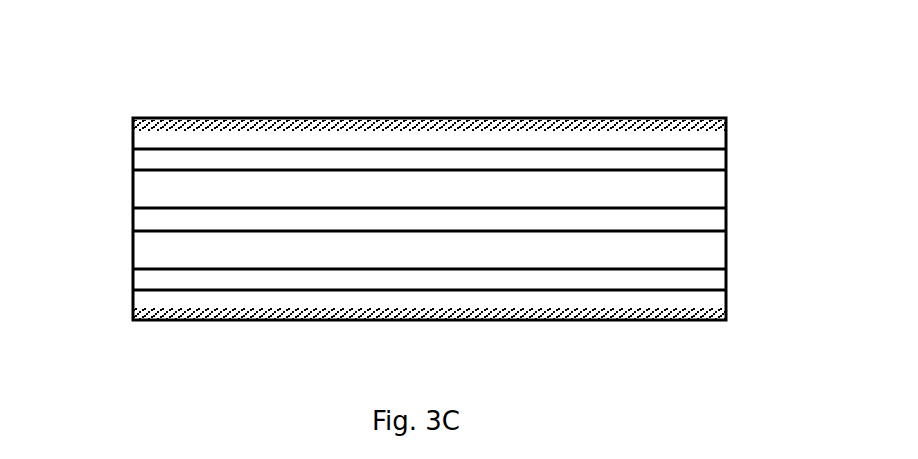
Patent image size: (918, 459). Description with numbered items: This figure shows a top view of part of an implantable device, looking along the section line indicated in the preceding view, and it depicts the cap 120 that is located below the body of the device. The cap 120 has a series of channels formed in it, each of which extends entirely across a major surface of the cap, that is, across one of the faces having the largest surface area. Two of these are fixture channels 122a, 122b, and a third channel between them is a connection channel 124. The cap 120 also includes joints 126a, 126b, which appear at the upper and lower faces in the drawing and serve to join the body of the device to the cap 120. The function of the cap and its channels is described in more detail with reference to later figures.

The cap 120 is at (394, 98).
The fixture channel 122a is at (243, 158).
The fixture channel 122b is at (688, 285).
The connection channel 124 is at (209, 216).
The joint 126a is at (660, 128).
The joint 126b is at (563, 308).